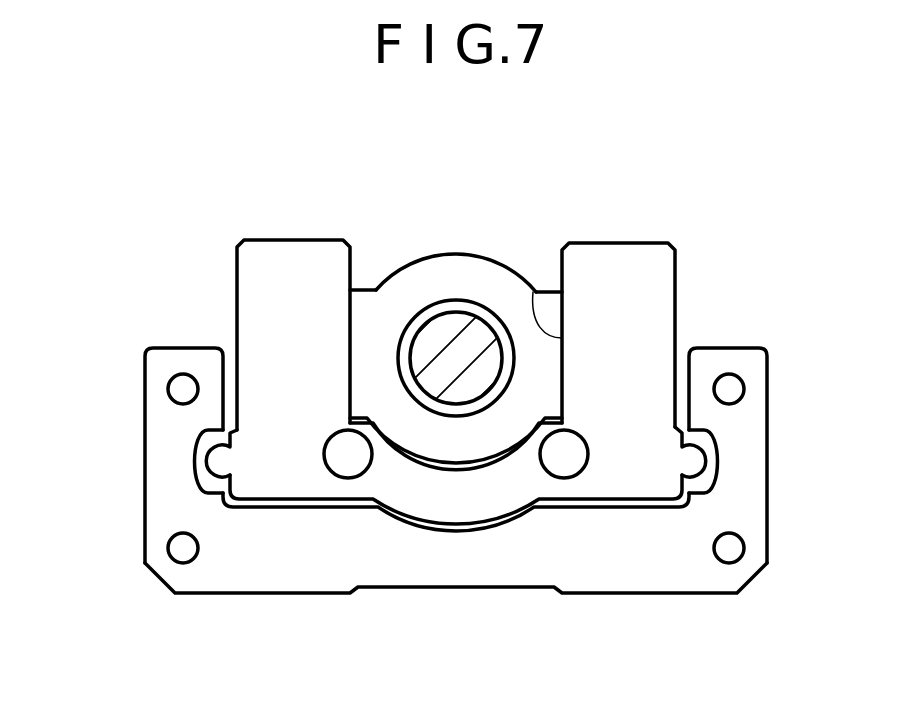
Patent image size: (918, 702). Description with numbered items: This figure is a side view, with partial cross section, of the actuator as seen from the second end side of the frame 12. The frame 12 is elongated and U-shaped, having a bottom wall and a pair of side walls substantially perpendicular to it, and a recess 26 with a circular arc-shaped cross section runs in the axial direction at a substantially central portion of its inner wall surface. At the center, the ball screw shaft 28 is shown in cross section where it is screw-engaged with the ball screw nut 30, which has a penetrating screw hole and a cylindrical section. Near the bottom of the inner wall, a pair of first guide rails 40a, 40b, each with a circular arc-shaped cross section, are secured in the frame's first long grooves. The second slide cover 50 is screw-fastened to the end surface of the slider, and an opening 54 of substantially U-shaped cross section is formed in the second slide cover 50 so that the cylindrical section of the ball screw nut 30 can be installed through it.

The frame 12 is at (412, 575).
The recess 26 is at (478, 517).
The ball screw shaft 28 is at (465, 330).
The ball screw nut 30 is at (427, 267).
The first guide rail 40a is at (708, 463).
The first guide rail 40b is at (197, 463).
The second slide cover 50 is at (659, 288).
The opening 54 is at (533, 291).